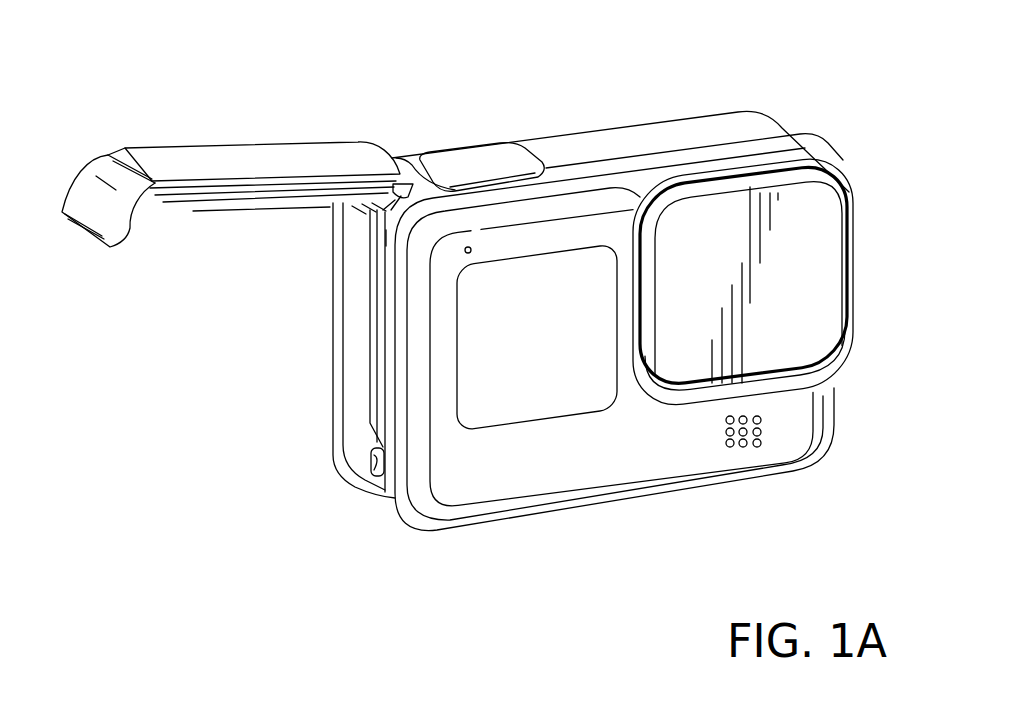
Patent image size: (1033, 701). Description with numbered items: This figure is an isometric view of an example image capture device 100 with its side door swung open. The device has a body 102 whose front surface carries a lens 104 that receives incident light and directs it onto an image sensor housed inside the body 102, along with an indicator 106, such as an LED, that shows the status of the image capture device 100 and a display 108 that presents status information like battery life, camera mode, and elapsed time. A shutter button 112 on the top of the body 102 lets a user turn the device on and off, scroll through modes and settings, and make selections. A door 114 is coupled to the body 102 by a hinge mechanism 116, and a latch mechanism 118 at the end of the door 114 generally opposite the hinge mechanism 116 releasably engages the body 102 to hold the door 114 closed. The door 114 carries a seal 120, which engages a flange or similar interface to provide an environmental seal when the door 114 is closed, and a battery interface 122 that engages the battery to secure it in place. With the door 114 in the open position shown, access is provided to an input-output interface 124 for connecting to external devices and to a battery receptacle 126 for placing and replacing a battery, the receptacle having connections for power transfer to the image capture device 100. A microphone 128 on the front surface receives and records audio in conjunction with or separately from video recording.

The image capture device 100 is at (815, 48).
The body 102 is at (652, 133).
The lens 104 is at (818, 283).
The indicator 106 is at (466, 251).
The display 108 is at (538, 398).
The shutter button 112 is at (433, 160).
The door 114 is at (285, 155).
The hinge mechanism 116 is at (408, 178).
The latch mechanism 118 is at (88, 190).
The seal 120 is at (177, 212).
The battery interface 122 is at (227, 212).
The input-output (I/O) interface 124 is at (378, 458).
The battery receptacle 126 is at (378, 237).
The microphone 128 is at (743, 447).